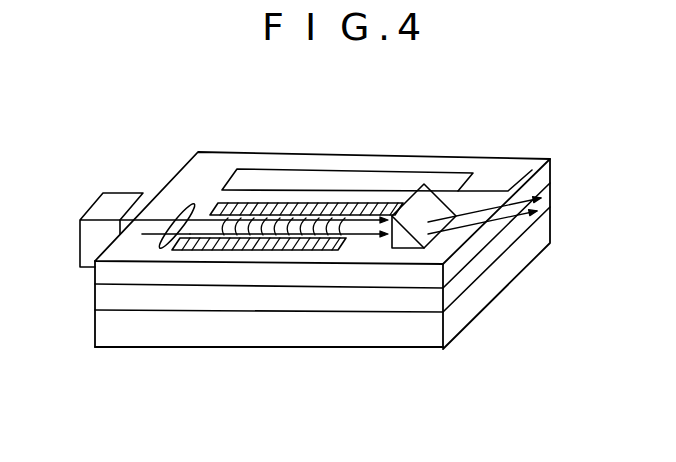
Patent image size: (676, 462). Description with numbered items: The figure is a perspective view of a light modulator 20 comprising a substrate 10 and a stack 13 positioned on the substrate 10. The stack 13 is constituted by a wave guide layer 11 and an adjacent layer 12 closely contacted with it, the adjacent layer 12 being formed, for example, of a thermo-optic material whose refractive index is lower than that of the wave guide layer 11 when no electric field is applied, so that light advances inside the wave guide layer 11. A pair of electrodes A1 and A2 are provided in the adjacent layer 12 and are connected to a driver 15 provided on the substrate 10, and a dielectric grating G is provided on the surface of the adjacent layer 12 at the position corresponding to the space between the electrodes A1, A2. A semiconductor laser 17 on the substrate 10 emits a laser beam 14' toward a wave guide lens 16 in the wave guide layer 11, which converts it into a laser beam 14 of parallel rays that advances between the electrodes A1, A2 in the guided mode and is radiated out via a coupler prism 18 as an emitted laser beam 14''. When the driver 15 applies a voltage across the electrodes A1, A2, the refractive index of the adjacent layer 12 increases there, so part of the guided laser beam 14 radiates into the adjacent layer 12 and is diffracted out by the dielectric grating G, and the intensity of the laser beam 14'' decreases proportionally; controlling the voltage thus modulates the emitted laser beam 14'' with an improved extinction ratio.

The light modulator 20 is at (336, 95).
The substrate 10 is at (362, 334).
The wave guide layer 11 is at (453, 295).
The adjacent layer 12 is at (457, 267).
The stack 13 is at (546, 293).
The laser beam of parallel rays (guided wave) 14 is at (254, 179).
The laser beam 14' is at (158, 196).
The laser beam radiated out of the coupler prism 14'' is at (484, 177).
The driver 15 is at (383, 183).
The wave guide lens 16 is at (163, 236).
The semiconductor laser 17 is at (100, 212).
The coupler prism 18 is at (424, 200).
The electrode A1 is at (267, 203).
The electrode A2 is at (237, 251).
The dielectric grating G is at (343, 219).